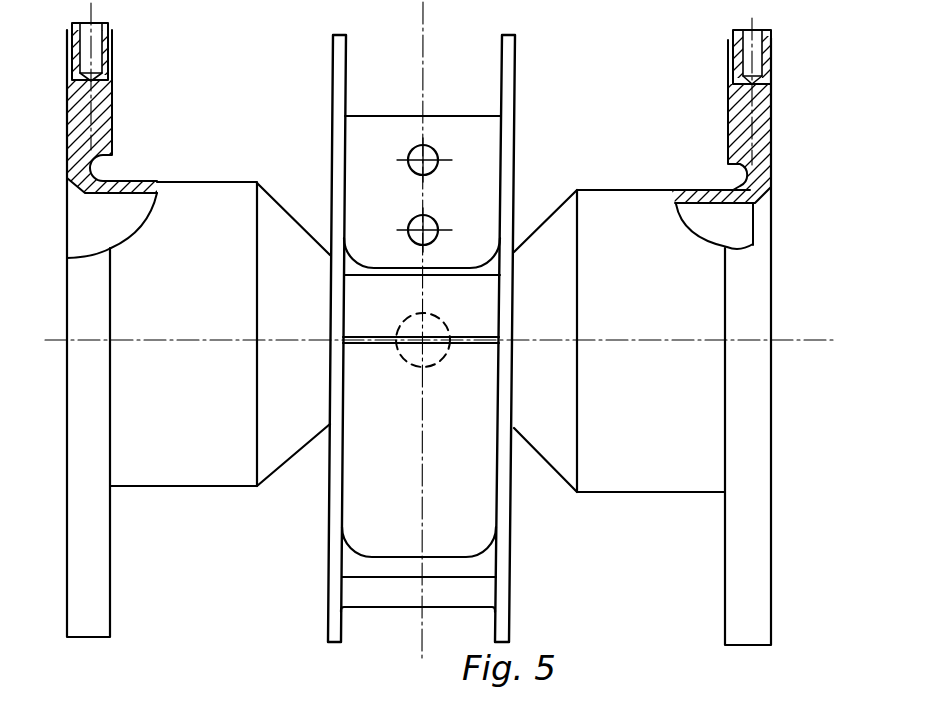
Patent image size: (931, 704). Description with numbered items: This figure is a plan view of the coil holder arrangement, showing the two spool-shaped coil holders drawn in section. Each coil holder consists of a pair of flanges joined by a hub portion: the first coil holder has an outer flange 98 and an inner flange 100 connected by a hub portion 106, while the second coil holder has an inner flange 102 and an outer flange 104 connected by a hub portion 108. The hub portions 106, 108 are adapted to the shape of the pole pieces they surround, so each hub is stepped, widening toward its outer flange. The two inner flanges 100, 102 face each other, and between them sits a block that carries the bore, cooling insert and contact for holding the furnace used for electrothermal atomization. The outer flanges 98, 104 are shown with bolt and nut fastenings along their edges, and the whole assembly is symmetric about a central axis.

The flange 98 is at (93, 622).
The flange 100 is at (342, 57).
The flange 102 is at (512, 57).
The flange 104 is at (733, 614).
The hub portion 106 is at (201, 462).
The hub portion 108 is at (648, 473).